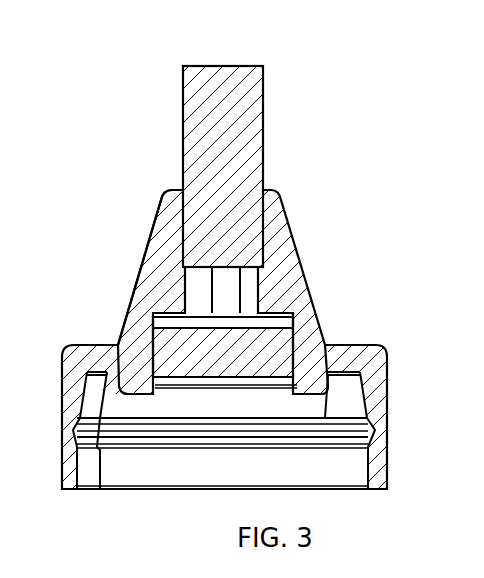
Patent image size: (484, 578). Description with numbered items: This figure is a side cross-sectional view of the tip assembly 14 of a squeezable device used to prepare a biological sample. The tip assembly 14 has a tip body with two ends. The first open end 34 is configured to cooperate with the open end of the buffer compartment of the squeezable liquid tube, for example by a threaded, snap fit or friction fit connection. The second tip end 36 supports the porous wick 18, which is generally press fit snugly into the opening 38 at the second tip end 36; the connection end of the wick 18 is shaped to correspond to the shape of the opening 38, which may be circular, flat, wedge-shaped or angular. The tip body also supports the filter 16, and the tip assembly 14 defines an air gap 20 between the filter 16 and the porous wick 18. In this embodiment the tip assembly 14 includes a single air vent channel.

The tip assembly 14 is at (346, 154).
The filter 16 is at (187, 348).
The porous wick 18 is at (220, 85).
The air gap 20 is at (227, 288).
The first open end 34 is at (177, 470).
The second tip end 36 is at (299, 250).
The opening 38 is at (183, 186).